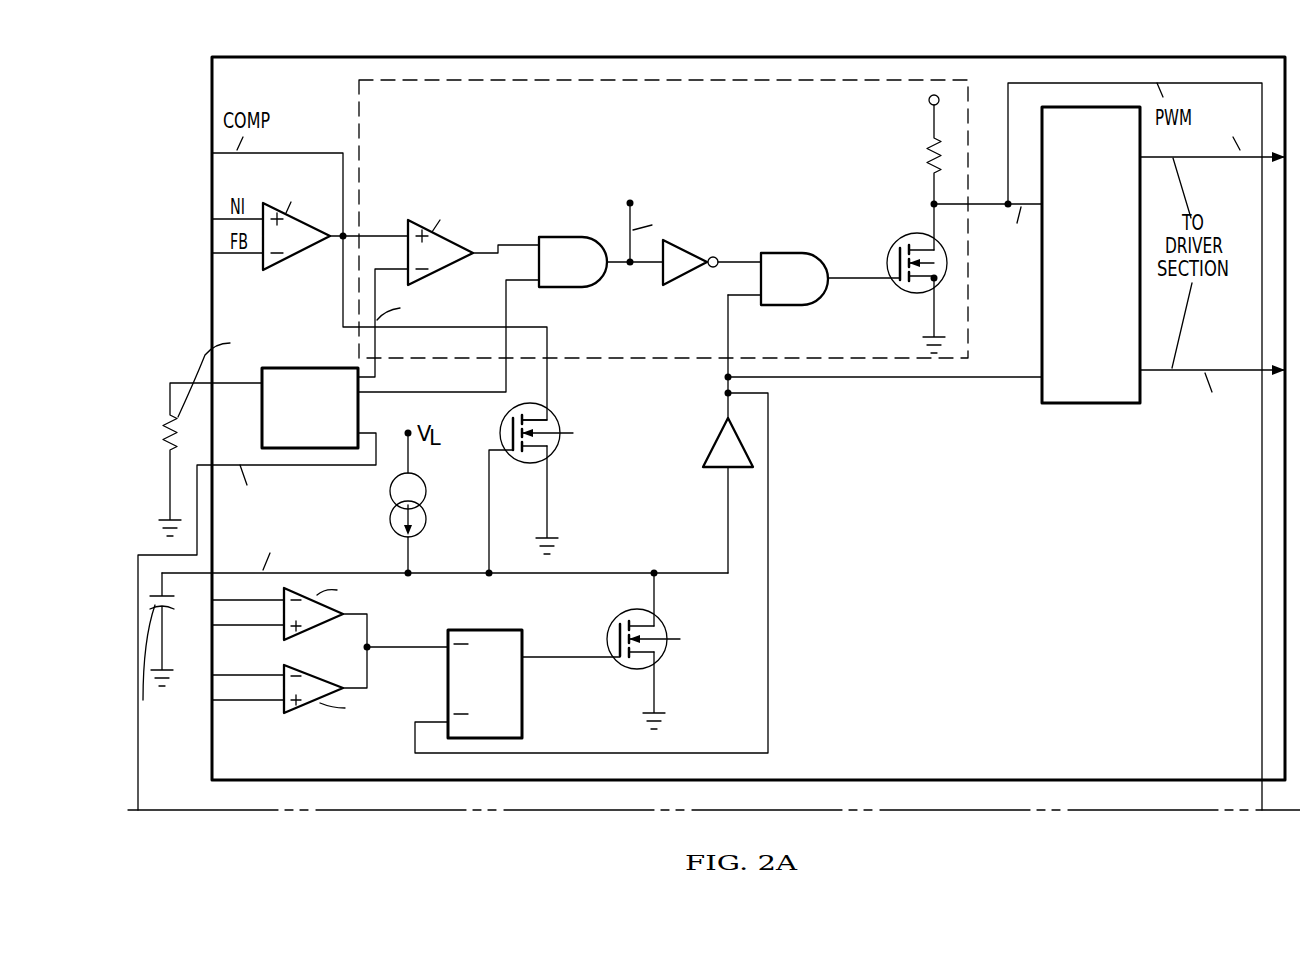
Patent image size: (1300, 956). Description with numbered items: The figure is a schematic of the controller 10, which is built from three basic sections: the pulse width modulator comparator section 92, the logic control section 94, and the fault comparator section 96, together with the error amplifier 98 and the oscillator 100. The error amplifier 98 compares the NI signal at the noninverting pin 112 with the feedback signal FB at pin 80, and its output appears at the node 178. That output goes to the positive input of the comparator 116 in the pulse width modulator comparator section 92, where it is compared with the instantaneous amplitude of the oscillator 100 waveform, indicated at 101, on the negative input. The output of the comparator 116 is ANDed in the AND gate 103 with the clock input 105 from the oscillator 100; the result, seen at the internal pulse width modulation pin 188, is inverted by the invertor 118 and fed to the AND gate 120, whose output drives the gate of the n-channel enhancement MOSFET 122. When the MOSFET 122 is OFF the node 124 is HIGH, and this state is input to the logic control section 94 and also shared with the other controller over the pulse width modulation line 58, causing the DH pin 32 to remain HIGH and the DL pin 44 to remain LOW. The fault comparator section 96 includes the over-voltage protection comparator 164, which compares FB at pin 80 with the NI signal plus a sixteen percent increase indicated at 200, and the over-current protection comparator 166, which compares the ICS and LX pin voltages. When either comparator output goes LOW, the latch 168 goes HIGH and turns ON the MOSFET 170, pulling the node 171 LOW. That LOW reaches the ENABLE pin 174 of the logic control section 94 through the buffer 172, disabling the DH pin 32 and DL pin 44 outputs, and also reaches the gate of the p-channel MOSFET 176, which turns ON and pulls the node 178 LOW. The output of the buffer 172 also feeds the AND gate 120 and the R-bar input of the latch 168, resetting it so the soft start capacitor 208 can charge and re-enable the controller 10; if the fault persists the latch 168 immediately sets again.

The controller 10 is at (845, 60).
The NI pin 112 is at (210, 218).
The FB pin 80 is at (210, 253).
The error amplifier 98 is at (293, 255).
The node 178 is at (362, 228).
The oscillator waveform 101 is at (421, 294).
The comparator 116 is at (462, 265).
The AND gate 103 is at (563, 222).
The internal pulse width modulation pin 188 is at (633, 200).
The invertor 118 is at (688, 272).
The AND gate 120 is at (790, 258).
The MOSFET 122 is at (905, 238).
The node 124 is at (1006, 201).
The pulse width modulator comparator section 92 is at (805, 140).
The logic control section 94 is at (1100, 204).
The DH pin 32 is at (1227, 160).
The DL pin 44 is at (1227, 366).
The pulse width modulation line 58 is at (1262, 531).
The oscillator 100 is at (326, 404).
The clock input 105 is at (458, 395).
The p-channel MOSFET 176 is at (553, 413).
The buffer 172 is at (714, 444).
The ENABLE pin 174 is at (1040, 379).
The node 171 is at (628, 572).
The MOSFET 170 is at (667, 628).
The latch 168 is at (522, 695).
The over-voltage protection comparator 164 is at (315, 627).
The over-current protection comparator 166 is at (315, 677).
The fault comparator section 96 is at (299, 677).
The combination signal 200 is at (228, 625).
The soft start capacitor 208 is at (158, 664).